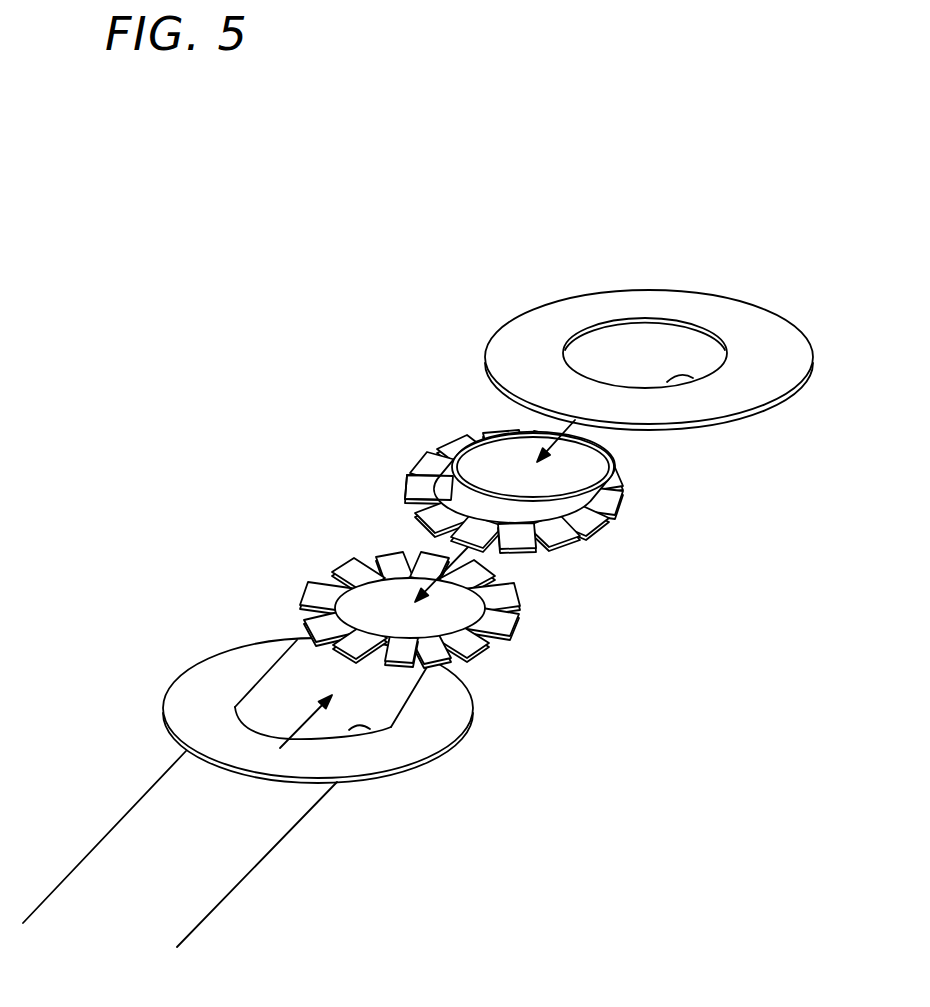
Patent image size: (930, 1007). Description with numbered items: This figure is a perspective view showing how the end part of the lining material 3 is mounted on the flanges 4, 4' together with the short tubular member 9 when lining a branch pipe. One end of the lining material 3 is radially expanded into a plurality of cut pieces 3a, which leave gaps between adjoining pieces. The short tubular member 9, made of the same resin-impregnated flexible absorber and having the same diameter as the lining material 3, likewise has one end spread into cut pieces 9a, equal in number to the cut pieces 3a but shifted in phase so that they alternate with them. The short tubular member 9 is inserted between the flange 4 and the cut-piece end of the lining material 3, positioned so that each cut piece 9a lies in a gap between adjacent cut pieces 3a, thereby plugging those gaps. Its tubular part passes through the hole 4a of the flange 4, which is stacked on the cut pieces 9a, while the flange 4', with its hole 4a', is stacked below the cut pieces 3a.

The lining material 3 is at (153, 827).
The cut pieces 3a is at (317, 598).
The flange 4 is at (634, 345).
The hole 4a is at (730, 419).
The flange 4' is at (289, 710).
The hole 4a' is at (413, 770).
The short tubular member 9 is at (460, 496).
The cut pieces 9a is at (423, 488).